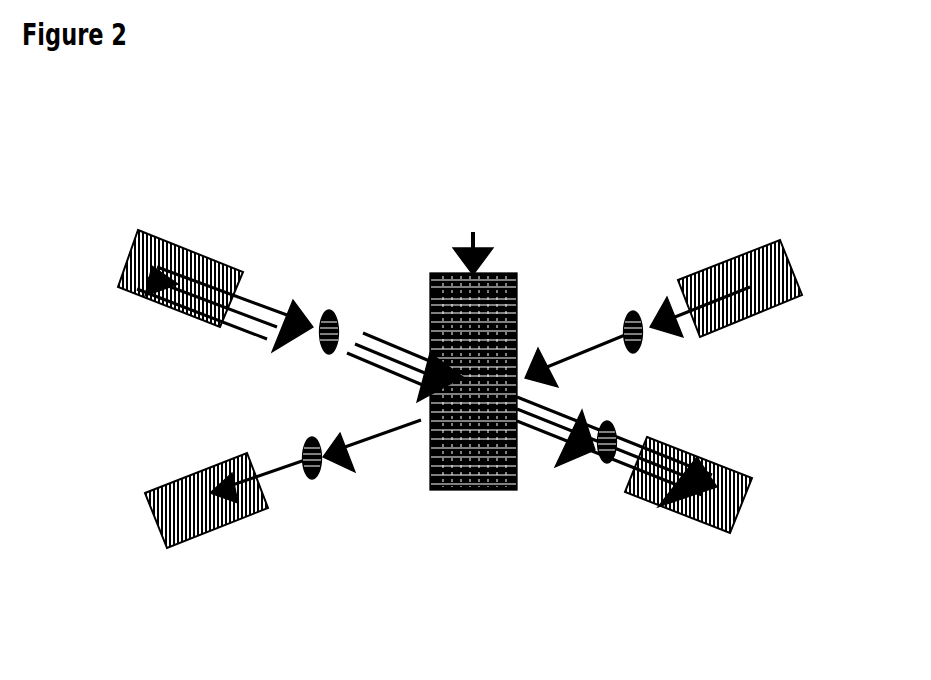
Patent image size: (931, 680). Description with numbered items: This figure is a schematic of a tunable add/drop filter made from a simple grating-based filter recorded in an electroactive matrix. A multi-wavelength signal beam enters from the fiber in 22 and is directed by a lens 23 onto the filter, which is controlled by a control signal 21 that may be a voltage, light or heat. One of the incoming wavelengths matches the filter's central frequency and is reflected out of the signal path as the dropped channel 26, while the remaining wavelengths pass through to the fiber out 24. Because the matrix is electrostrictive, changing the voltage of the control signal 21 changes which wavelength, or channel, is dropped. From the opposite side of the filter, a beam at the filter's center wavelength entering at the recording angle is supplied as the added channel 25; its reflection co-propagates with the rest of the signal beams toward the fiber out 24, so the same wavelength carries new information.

The control signal 21 is at (467, 317).
The fiber in 22 is at (215, 278).
The lens 23 is at (374, 328).
The fiber out 24 is at (634, 465).
The added channel 25 is at (663, 296).
The dropped channel 26 is at (272, 476).